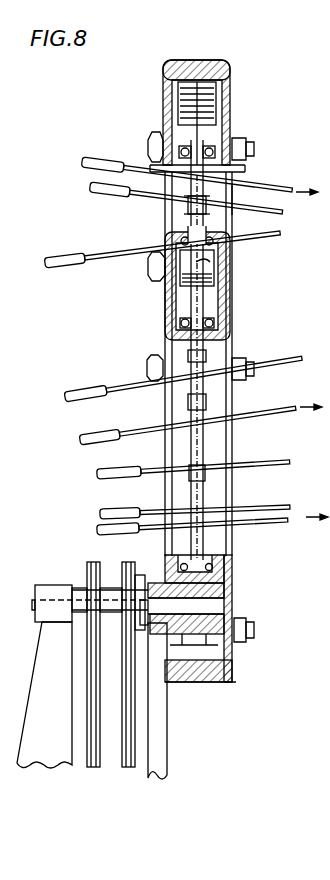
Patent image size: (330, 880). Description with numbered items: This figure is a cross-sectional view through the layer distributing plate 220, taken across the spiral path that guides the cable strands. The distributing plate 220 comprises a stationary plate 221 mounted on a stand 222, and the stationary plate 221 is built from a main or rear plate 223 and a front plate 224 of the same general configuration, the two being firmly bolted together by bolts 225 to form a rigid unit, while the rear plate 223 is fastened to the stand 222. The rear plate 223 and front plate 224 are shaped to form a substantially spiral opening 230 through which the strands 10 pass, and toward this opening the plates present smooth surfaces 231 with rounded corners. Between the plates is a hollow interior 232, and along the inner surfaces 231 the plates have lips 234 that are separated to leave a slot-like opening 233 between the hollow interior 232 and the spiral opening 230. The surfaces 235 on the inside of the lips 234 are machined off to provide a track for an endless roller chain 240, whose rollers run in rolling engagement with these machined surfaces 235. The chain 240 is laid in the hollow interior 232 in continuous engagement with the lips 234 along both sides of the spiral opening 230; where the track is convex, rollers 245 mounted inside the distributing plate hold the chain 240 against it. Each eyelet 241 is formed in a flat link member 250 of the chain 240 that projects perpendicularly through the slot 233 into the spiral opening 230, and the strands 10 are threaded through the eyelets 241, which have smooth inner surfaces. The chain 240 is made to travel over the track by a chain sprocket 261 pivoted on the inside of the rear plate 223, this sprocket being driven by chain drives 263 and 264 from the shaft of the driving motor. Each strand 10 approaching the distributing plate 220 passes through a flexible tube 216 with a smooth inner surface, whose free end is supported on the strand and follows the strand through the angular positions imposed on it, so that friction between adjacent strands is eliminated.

The layer distributing plate 220 is at (236, 39).
The rear plate 223 is at (163, 72).
The front plate 224 is at (230, 70).
The hollow interior 232 is at (216, 97).
The smooth surfaces 231 is at (234, 172).
The eyelet 241 is at (190, 208).
The endless roller chain 240 is at (189, 141).
The machined surfaces 235 is at (168, 262).
The roller 245 is at (232, 262).
The slot-like opening 233 is at (188, 200).
The flat link member 250 is at (190, 396).
The bolt 225 is at (250, 140).
The lip 234 is at (172, 160).
The chain sprocket 261 is at (232, 592).
The stationary plate 221 is at (238, 684).
The stand 222 is at (166, 716).
The chain drive 263 is at (88, 568).
The chain drive 264 is at (124, 566).
The flexible tube 216 is at (95, 190).
The spiral opening 230 is at (234, 200).
The strand 10 is at (284, 200).